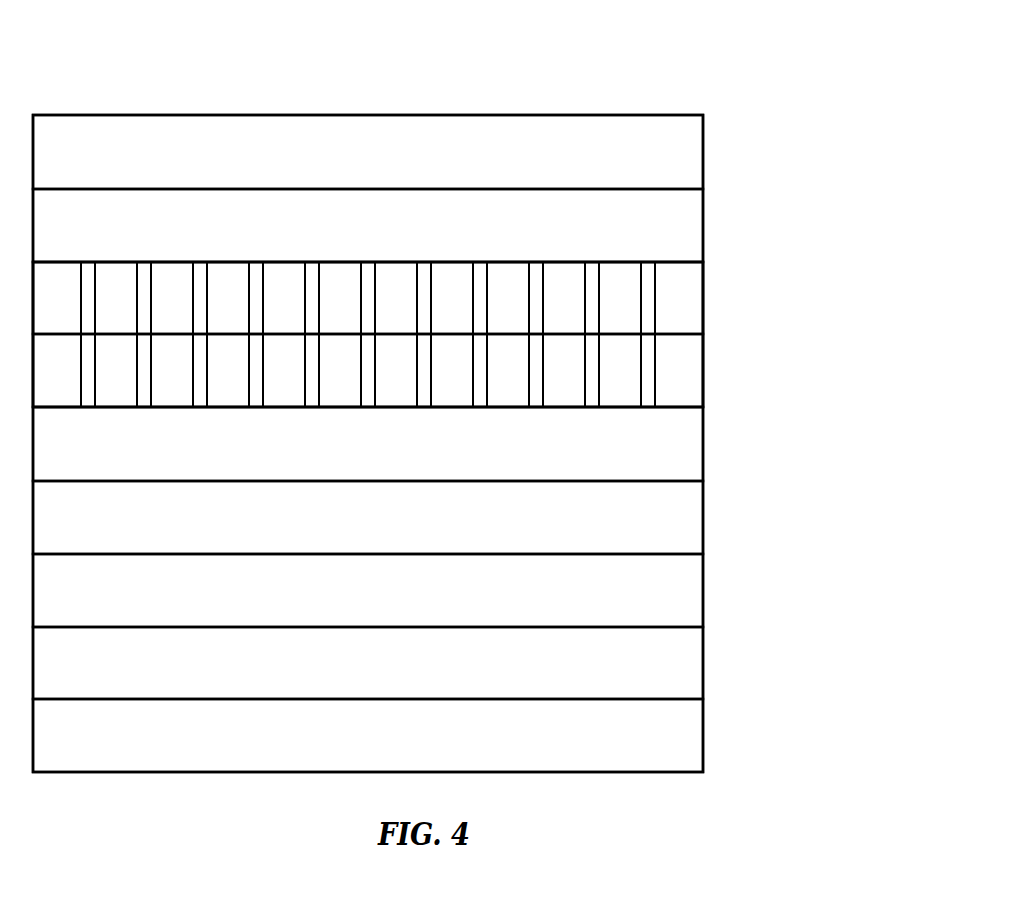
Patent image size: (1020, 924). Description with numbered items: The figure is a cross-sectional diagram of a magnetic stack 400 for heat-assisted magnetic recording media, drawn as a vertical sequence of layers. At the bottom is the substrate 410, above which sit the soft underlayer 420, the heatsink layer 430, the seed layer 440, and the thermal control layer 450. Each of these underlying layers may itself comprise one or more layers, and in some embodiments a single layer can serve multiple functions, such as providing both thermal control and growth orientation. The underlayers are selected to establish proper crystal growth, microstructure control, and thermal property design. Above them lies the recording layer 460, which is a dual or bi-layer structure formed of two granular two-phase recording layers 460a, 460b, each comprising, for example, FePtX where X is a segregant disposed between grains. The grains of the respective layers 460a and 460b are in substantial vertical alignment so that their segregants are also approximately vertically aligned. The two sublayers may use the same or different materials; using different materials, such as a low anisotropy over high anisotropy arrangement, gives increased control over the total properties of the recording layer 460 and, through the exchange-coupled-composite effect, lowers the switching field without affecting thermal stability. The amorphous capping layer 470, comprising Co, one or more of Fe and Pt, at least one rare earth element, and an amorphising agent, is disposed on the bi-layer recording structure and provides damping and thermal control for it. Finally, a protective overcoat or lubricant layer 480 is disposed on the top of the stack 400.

The stack 400 is at (644, 64).
The substrate 410 is at (694, 737).
The soft underlayer 420 is at (694, 665).
The heatsink layer 430 is at (694, 592).
The seed layer 440 is at (694, 519).
The thermal control layer 450 is at (694, 446).
The recording layer 460 is at (780, 282).
The granular two-phase recording layer 460a is at (694, 372).
The granular two-phase recording layer 460b is at (694, 300).
The capping layer 470 is at (694, 227).
The protective overcoat or lubricant layer 480 is at (694, 154).